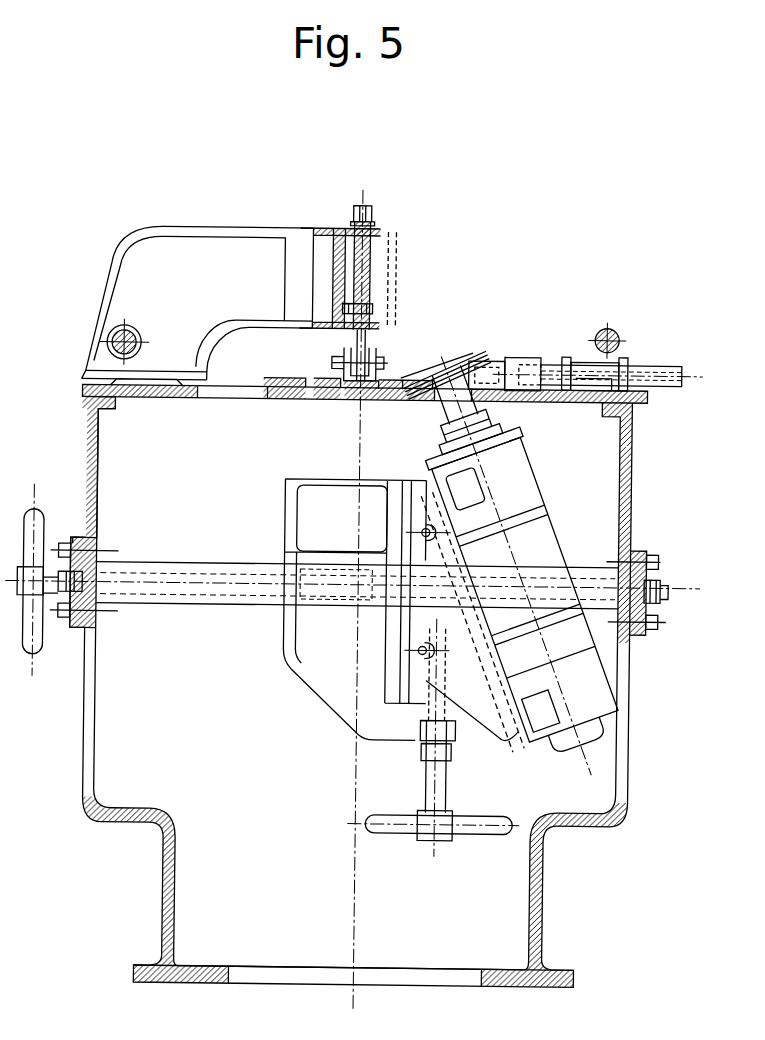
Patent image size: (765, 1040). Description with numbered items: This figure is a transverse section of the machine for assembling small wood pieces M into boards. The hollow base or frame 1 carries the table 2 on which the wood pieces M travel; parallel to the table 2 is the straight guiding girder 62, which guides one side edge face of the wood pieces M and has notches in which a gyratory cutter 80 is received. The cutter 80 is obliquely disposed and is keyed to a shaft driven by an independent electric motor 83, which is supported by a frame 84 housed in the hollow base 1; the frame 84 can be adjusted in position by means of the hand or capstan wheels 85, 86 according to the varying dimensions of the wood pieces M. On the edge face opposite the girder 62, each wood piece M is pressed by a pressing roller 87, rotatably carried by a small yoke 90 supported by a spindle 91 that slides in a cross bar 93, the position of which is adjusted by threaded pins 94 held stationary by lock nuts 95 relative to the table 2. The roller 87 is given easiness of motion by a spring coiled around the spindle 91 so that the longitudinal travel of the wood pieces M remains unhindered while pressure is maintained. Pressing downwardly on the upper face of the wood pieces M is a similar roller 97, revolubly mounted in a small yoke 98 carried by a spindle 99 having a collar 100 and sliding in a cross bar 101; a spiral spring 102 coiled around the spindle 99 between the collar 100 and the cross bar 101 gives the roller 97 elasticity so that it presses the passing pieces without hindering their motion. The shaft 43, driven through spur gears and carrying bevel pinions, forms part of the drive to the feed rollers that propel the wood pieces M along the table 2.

The base or frame 1 is at (546, 878).
The table 2 is at (643, 402).
The shaft 43 is at (612, 332).
The guiding girder 62 is at (271, 380).
The gyratory cutter 80 is at (493, 358).
The electric motor 83 is at (508, 568).
The frame 84 is at (322, 490).
The hand or capstan wheel 85 is at (35, 652).
The hand or capstan wheel 86 is at (471, 831).
The pressing roller 87 is at (378, 380).
The yoke 90 is at (430, 345).
The spindle 91 is at (506, 370).
The cross bar 93 is at (562, 356).
The threaded pin 94 is at (641, 362).
The lock nut 95 is at (620, 356).
The roller 97 is at (369, 382).
The yoke 98 is at (341, 357).
The spindle 99 is at (367, 212).
The collar 100 is at (363, 306).
The cross bar 101 is at (336, 228).
The spiral spring 102 is at (393, 258).
The wood pieces M is at (402, 380).